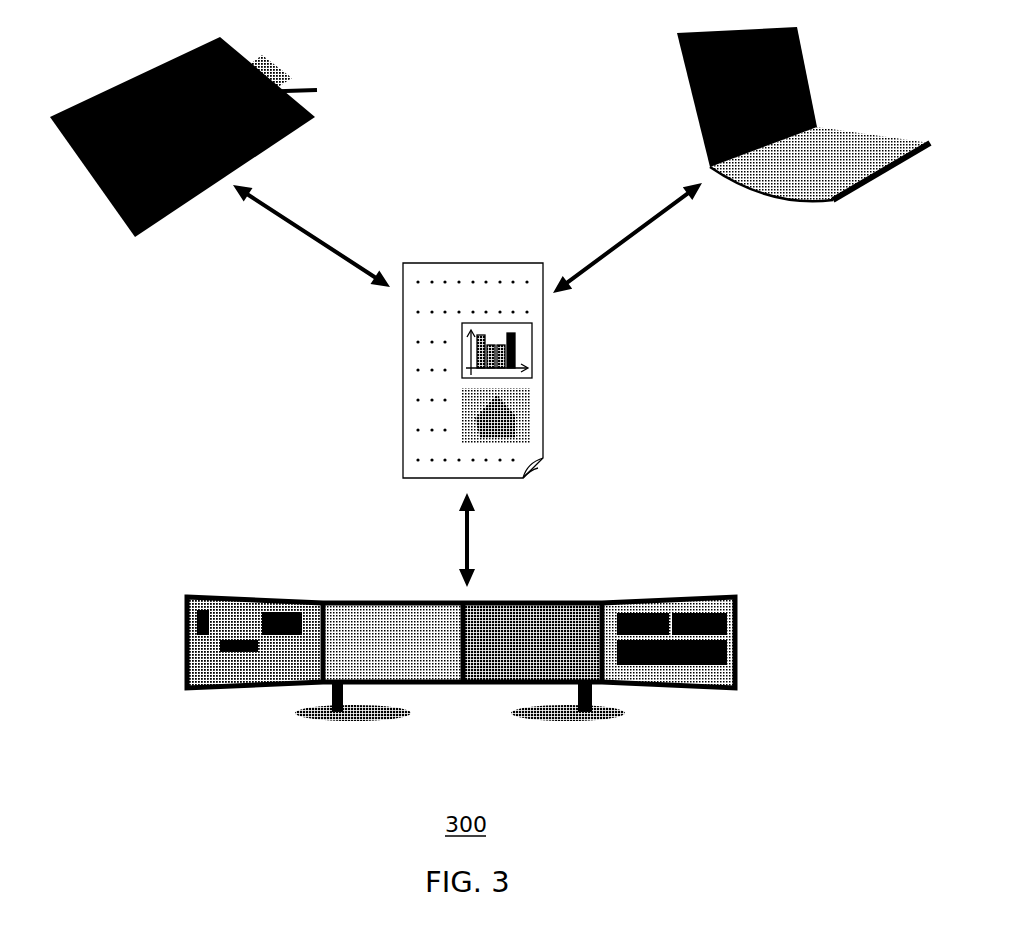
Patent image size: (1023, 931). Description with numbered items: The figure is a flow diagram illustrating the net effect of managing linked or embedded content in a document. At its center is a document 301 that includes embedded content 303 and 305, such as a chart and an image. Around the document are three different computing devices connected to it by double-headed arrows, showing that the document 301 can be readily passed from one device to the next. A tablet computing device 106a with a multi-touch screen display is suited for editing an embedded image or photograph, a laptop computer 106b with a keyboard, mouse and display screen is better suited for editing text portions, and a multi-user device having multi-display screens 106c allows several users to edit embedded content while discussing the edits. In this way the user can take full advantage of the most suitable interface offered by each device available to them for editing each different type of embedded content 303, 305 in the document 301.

The tablet computing device 106a is at (315, 118).
The laptop computer 106b is at (928, 144).
The multi-user device having multi-display screens 106c is at (735, 643).
The document 301 is at (469, 263).
The embedded content 303 is at (532, 345).
The embedded content 305 is at (530, 417).